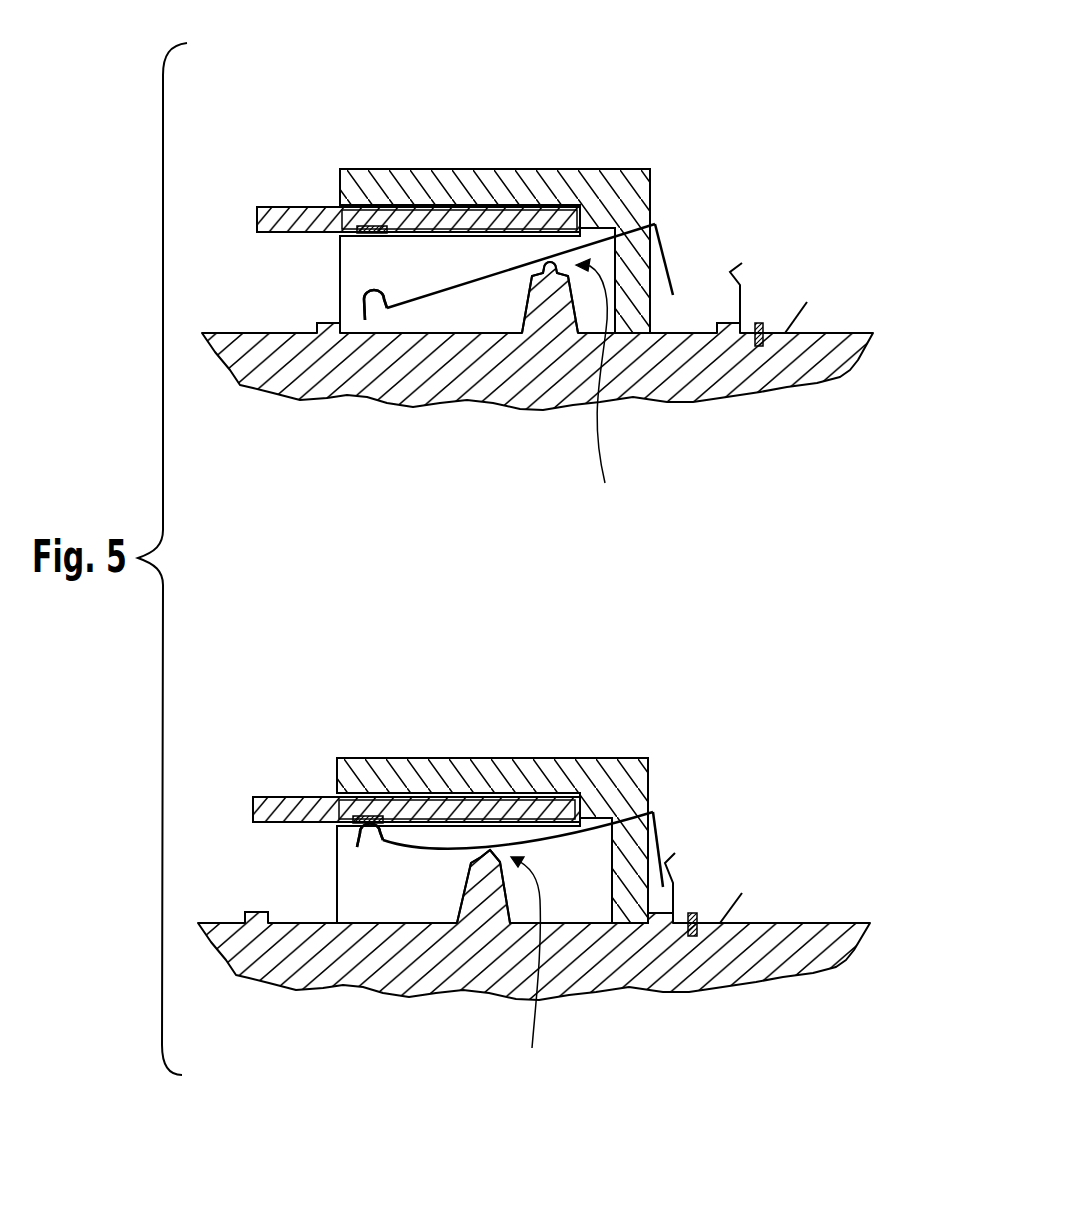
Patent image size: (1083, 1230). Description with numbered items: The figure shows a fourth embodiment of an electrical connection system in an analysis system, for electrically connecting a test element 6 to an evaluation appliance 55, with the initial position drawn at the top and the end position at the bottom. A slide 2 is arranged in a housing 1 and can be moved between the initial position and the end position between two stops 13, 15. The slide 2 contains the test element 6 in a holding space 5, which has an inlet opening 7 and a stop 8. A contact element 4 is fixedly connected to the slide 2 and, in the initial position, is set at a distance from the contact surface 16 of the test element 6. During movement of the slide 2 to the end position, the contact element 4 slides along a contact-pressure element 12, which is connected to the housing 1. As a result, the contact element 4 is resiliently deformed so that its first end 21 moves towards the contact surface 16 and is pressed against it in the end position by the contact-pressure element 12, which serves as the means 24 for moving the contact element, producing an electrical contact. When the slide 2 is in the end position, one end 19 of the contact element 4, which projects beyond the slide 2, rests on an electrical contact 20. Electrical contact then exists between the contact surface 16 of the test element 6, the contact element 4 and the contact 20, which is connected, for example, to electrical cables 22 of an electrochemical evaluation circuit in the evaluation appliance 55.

The housing 1 is at (617, 368).
The slide 2 is at (450, 186).
The contact element 4 is at (487, 277).
The holding space 5 is at (516, 206).
The test element 6 is at (285, 218).
The inlet opening 7 is at (340, 206).
The stop 8 is at (586, 226).
The contact-pressure element 12 is at (550, 290).
The stop 13 is at (326, 323).
The stop 15 is at (726, 322).
The contact surface 16 is at (375, 226).
The end of the contact element 19 is at (663, 238).
The electrical contact 20 is at (744, 292).
The first end 21 is at (372, 293).
The electrical cables 22 is at (779, 333).
The means for moving the contact element 24 is at (574, 671).
The evaluation appliance 55 is at (712, 102).